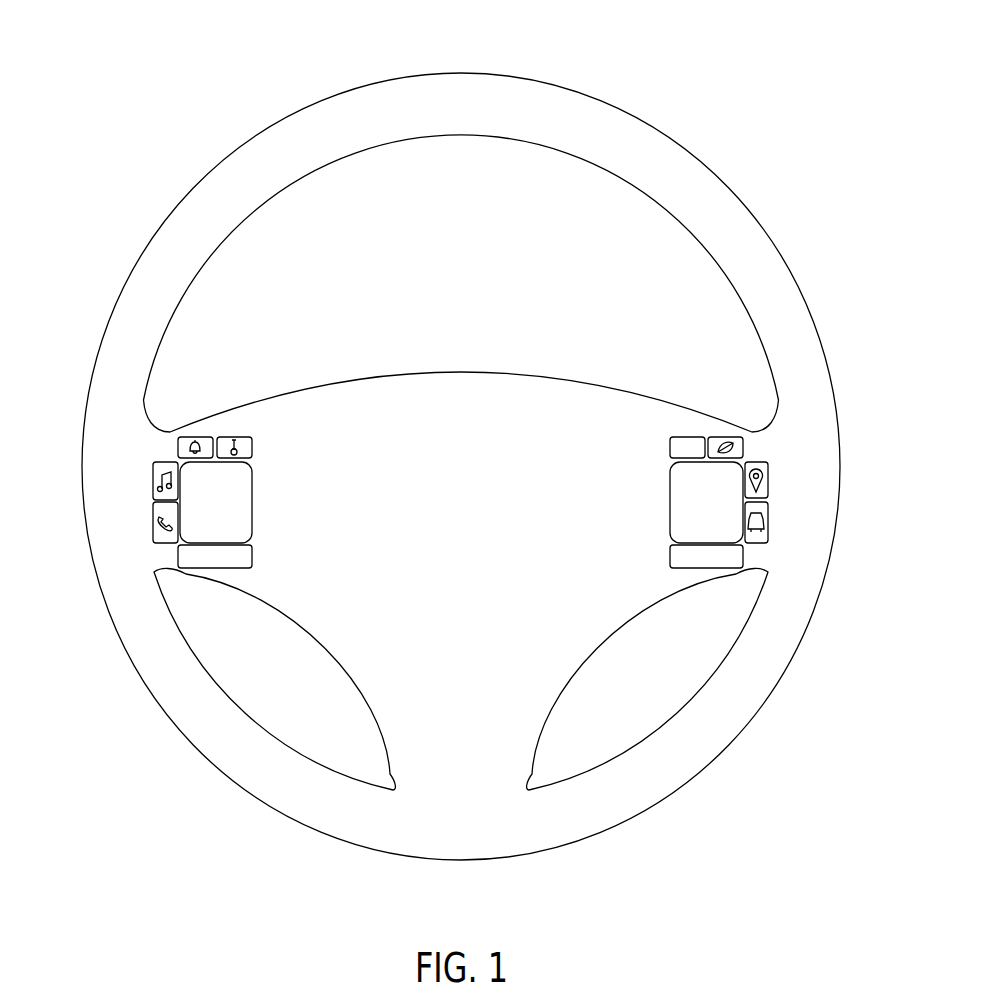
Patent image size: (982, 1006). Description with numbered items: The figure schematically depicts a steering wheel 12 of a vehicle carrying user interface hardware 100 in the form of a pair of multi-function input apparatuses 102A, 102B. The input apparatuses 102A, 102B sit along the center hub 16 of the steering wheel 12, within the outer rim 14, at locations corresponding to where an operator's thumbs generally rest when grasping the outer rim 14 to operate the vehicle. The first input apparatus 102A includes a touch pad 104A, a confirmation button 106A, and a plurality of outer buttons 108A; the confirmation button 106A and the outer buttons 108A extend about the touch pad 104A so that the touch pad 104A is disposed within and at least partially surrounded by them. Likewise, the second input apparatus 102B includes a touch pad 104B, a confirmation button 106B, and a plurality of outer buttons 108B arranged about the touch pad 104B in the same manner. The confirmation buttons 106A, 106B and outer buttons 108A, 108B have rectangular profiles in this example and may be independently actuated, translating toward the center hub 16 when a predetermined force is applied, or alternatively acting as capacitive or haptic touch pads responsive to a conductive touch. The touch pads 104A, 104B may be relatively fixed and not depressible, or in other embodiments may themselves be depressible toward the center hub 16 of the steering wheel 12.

The steering wheel 12 is at (459, 432).
The outer rim 14 is at (303, 110).
The center hub 16 is at (475, 532).
The user interface hardware 100 is at (459, 521).
The input apparatus 102A is at (274, 552).
The input apparatus 102B is at (647, 552).
The touch pad 104A is at (246, 484).
The touch pad 104B is at (680, 489).
The confirmation button 106A is at (183, 556).
The confirmation button 106B is at (737, 553).
The plurality of outer buttons 108A is at (180, 452).
The plurality of outer buttons 108B is at (737, 452).